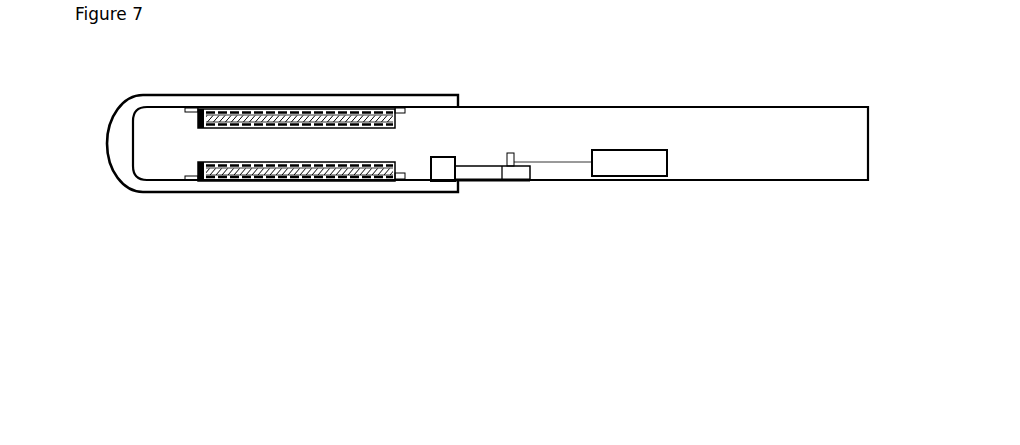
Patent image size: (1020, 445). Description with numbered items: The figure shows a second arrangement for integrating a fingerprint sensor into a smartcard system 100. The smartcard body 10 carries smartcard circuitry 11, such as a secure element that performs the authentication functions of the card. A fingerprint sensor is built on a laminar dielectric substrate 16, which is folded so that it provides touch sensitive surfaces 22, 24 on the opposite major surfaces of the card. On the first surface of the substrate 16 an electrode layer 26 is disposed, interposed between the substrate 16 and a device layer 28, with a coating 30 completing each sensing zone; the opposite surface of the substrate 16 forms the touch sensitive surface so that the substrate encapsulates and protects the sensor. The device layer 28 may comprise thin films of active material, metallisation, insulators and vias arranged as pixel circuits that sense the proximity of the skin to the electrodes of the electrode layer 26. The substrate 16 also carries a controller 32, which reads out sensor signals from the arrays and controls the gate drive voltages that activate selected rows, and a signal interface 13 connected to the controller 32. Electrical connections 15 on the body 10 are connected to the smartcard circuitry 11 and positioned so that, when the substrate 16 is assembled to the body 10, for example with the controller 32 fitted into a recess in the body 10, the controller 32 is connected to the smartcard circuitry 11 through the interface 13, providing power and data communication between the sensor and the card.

The smartcard body 10 is at (786, 180).
The smartcard circuitry 11 is at (603, 150).
The signal interface 13 is at (478, 172).
The electrical connections 15 is at (525, 180).
The laminar dielectric substrate 16 is at (144, 99).
The touch sensitive surface 22 is at (326, 94).
The touch sensitive surface 24 is at (338, 192).
The electrode layer 26 is at (343, 180).
The device layer 28 is at (375, 180).
The coating 30 is at (425, 186).
The controller 32 is at (442, 170).
The smartcard system 100 is at (514, 322).